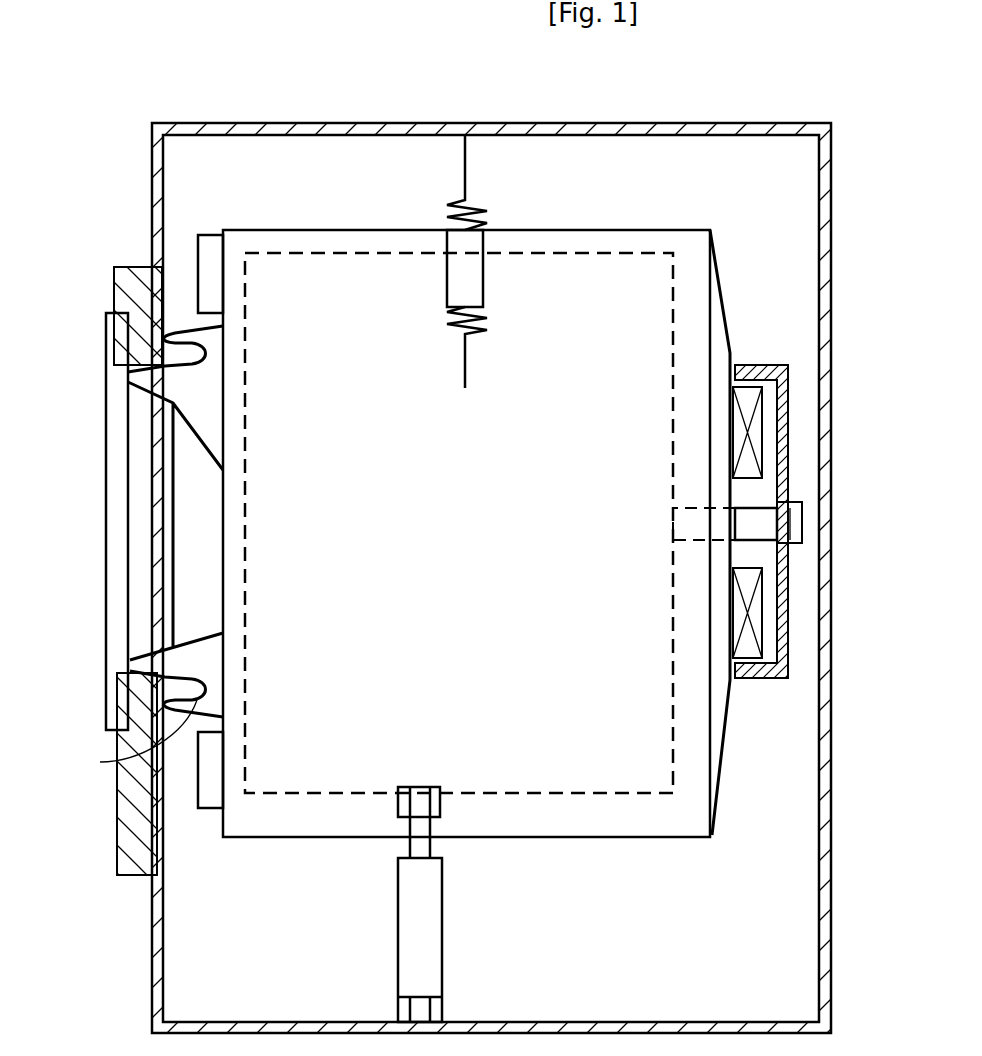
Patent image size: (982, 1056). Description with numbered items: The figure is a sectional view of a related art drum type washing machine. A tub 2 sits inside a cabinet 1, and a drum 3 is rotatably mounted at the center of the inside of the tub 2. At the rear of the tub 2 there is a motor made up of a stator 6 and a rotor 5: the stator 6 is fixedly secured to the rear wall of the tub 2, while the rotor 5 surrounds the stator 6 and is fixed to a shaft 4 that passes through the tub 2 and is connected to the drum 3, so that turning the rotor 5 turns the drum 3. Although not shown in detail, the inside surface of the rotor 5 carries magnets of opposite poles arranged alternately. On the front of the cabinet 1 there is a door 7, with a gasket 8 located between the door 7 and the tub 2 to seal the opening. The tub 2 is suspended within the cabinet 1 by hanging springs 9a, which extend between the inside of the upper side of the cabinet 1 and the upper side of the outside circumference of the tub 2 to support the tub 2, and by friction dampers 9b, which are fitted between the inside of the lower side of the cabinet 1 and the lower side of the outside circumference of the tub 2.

The cabinet 1 is at (256, 124).
The tub 2 is at (614, 229).
The drum 3 is at (350, 252).
The shaft 4 is at (753, 522).
The rotor 5 is at (783, 622).
The stator 6 is at (757, 432).
The door 7 is at (118, 538).
The gasket 8 is at (122, 770).
The hanging springs 9a is at (476, 200).
The friction dampers 9b is at (425, 936).